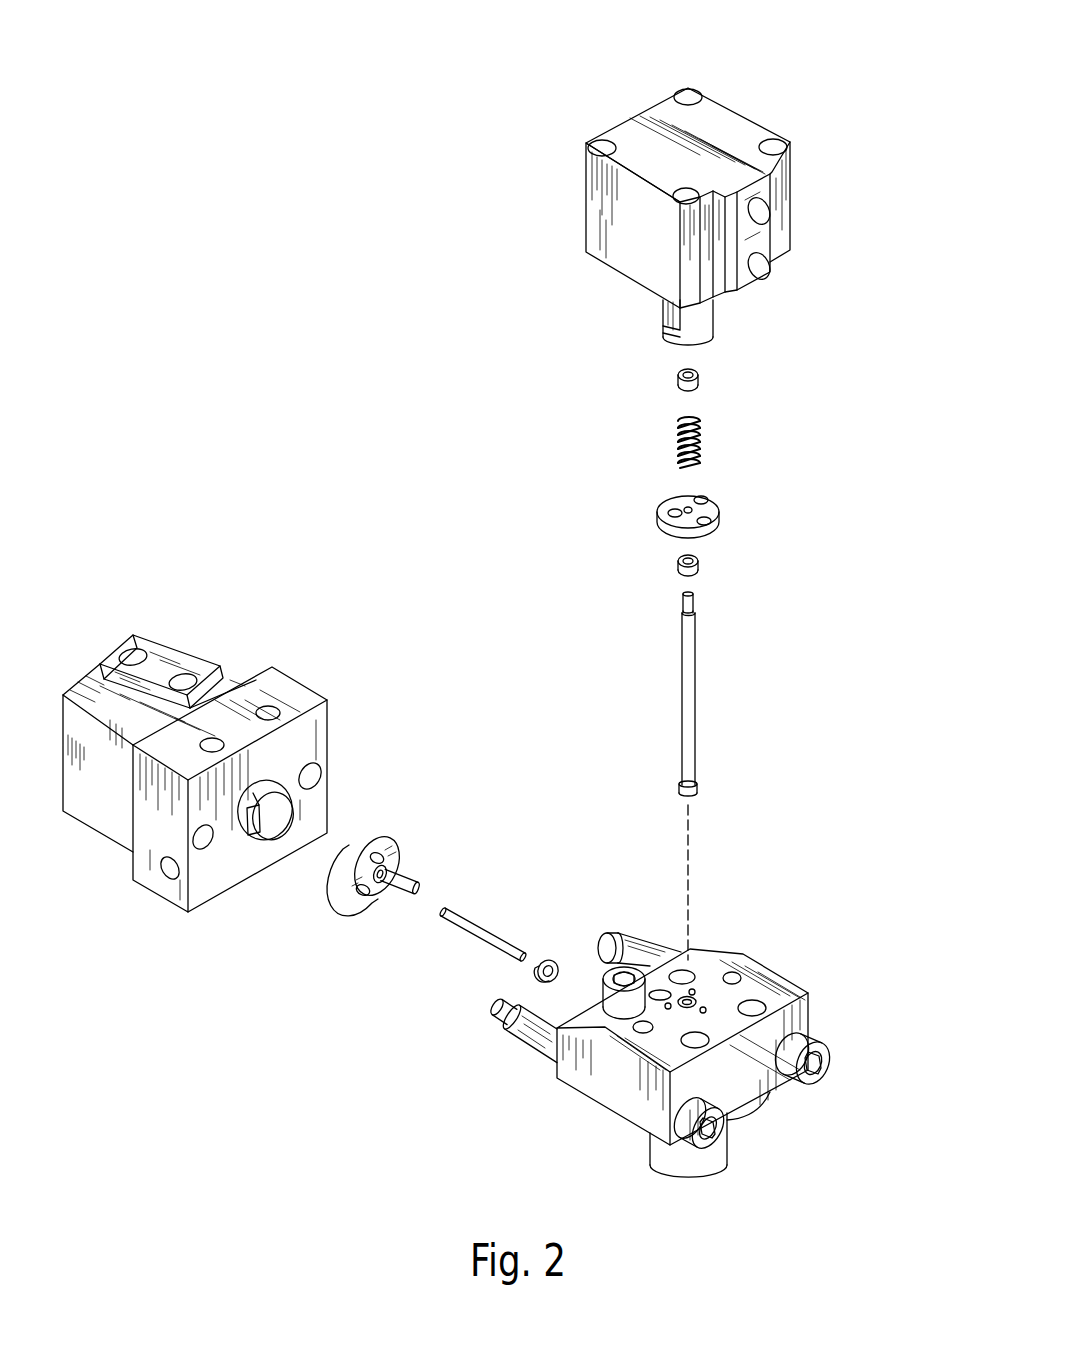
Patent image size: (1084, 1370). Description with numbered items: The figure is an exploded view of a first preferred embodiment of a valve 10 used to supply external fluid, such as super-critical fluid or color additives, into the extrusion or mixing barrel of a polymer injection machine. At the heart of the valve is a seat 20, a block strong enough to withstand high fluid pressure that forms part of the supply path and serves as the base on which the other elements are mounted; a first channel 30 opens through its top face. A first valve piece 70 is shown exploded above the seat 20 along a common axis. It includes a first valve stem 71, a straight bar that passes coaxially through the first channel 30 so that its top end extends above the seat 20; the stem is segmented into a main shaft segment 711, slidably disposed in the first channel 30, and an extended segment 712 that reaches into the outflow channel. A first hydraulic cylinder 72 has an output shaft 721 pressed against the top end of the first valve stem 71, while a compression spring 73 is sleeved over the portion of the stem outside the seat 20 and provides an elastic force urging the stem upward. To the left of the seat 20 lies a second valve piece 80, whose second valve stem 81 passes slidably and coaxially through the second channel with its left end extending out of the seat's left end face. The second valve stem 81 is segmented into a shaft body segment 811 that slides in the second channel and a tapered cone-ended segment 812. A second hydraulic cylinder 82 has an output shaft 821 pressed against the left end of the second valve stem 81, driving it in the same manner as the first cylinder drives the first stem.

The valve 10 is at (253, 1150).
The seat 20 is at (800, 1017).
The first channel 30 is at (697, 997).
The first valve piece 70 is at (712, 640).
The first valve stem 71 is at (695, 697).
The main shaft segment 711 is at (683, 662).
The extended segment 712 is at (696, 789).
The first hydraulic cylinder 72 is at (730, 127).
The output shaft 721 is at (703, 322).
The compression spring 73 is at (700, 437).
The second valve piece 80 is at (254, 640).
The second valve stem 81 is at (480, 943).
The shaft body segment 811 is at (473, 925).
The cone-ended segment 812 is at (537, 953).
The second hydraulic cylinder 82 is at (103, 823).
The output shaft 821 is at (272, 822).